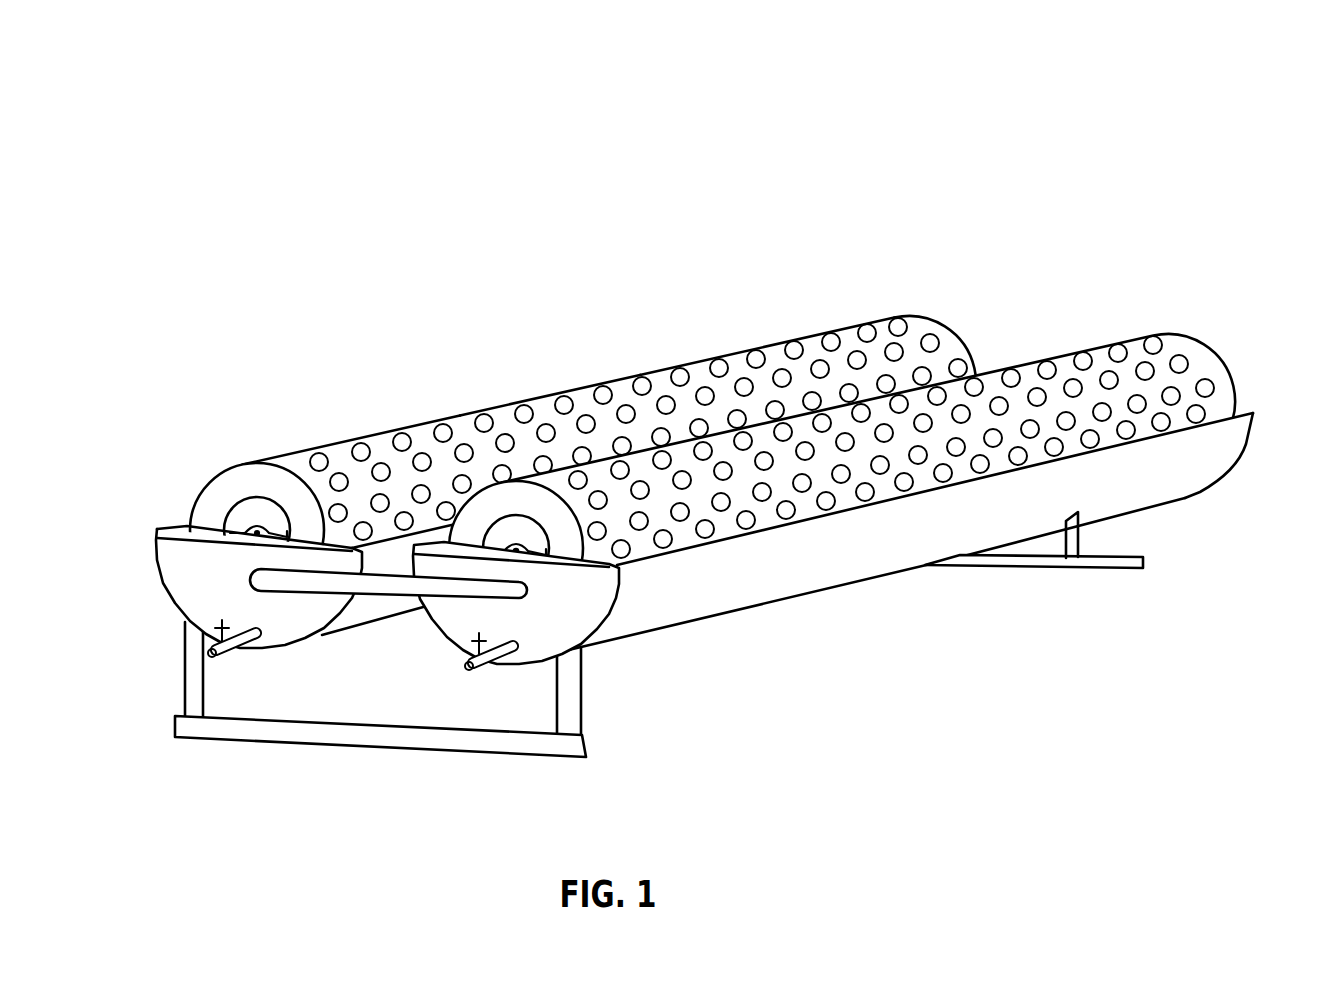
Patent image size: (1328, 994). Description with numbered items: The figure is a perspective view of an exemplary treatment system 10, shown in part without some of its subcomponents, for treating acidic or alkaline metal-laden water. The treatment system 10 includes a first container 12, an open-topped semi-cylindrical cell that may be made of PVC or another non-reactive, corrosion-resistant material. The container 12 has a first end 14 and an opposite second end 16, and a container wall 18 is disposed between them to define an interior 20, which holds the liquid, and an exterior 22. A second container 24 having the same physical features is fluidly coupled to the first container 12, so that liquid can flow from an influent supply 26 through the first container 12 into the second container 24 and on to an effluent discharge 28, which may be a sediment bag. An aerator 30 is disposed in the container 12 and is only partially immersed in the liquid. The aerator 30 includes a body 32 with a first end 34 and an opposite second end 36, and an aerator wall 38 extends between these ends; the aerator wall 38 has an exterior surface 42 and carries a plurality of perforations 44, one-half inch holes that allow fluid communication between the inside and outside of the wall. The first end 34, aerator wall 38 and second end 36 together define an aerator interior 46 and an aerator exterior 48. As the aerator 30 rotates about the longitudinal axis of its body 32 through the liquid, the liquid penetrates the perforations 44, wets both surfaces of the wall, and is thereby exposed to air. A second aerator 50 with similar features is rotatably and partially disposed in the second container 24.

The treatment system 10 is at (678, 402).
The container 12 is at (160, 538).
The first end 14 is at (198, 571).
The second end 16 is at (1274, 440).
The container wall 18 is at (365, 608).
The interior 20 is at (176, 503).
The exterior 22 is at (88, 632).
The second container 24 is at (703, 600).
The influent supply 26 is at (247, 652).
The effluent discharge 28 is at (485, 665).
The aerator 30 is at (262, 455).
The body 32 is at (375, 436).
The first end 34 is at (224, 471).
The second end 36 is at (968, 310).
The aerator wall 38 is at (480, 382).
The exterior surface 42 is at (574, 371).
The perforations 44 is at (686, 363).
The aerator interior 46 is at (296, 486).
The aerator exterior 48 is at (777, 255).
The second aerator 50 is at (1098, 309).